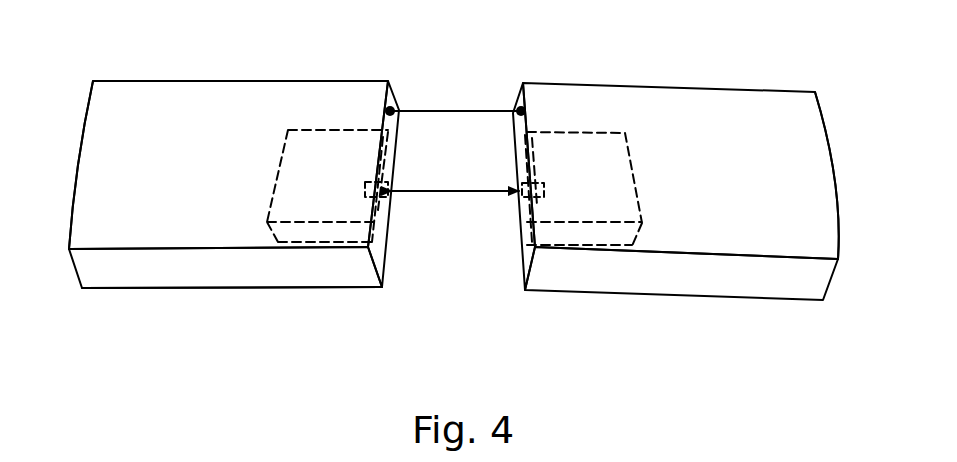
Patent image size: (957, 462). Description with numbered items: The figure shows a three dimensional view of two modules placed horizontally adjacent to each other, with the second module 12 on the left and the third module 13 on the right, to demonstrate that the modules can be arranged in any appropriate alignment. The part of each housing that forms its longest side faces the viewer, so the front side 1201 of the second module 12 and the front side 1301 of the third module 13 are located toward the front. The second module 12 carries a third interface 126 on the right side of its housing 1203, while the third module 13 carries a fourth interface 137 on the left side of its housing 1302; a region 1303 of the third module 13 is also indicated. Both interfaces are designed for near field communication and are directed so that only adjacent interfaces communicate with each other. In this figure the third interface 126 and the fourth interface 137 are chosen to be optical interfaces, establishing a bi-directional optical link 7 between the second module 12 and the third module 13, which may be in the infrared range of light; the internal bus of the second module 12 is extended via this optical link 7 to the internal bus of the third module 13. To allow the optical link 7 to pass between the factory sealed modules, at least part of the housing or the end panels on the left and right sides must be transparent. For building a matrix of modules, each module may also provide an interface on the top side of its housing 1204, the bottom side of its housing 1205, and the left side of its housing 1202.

The second module 12 is at (244, 185).
The third module 13 is at (667, 192).
The top side of the housing 1204 is at (309, 74).
The left side of the housing 1202 is at (61, 184).
The front side 1201 is at (118, 235).
The bottom side of the housing 1205 is at (202, 270).
The right side of the housing 1203 is at (376, 243).
The third interface 126 is at (390, 160).
The right side surface of second module 1303 is at (839, 185).
The front side 1301 is at (725, 235).
The left side of the housing 1302 is at (534, 252).
The fourth interface 137 is at (520, 155).
The optical link 7 is at (445, 193).